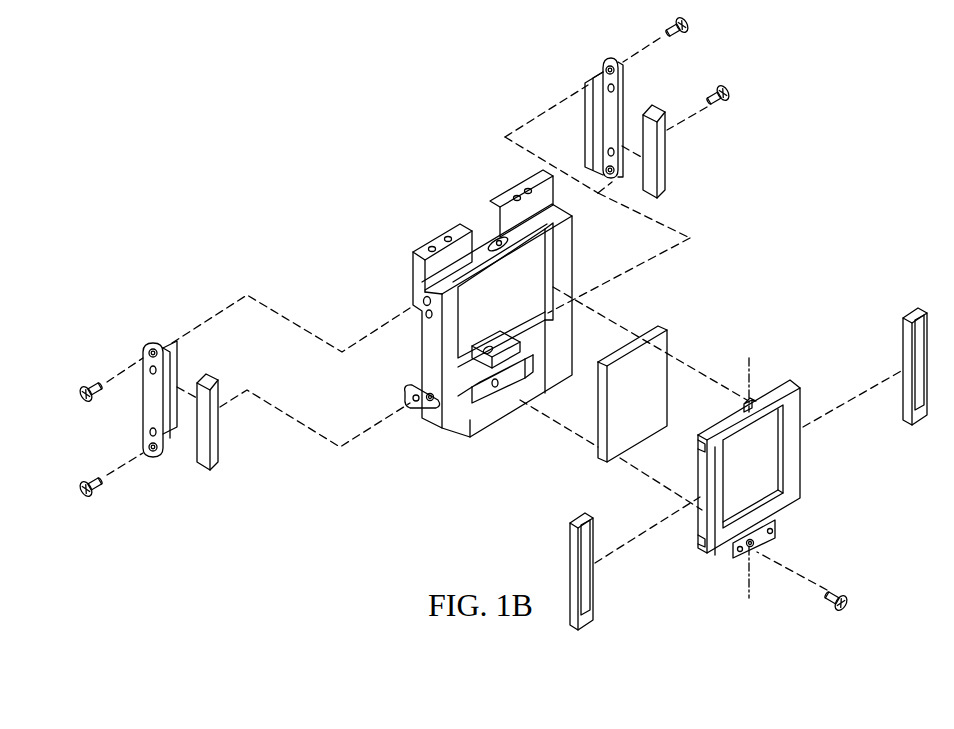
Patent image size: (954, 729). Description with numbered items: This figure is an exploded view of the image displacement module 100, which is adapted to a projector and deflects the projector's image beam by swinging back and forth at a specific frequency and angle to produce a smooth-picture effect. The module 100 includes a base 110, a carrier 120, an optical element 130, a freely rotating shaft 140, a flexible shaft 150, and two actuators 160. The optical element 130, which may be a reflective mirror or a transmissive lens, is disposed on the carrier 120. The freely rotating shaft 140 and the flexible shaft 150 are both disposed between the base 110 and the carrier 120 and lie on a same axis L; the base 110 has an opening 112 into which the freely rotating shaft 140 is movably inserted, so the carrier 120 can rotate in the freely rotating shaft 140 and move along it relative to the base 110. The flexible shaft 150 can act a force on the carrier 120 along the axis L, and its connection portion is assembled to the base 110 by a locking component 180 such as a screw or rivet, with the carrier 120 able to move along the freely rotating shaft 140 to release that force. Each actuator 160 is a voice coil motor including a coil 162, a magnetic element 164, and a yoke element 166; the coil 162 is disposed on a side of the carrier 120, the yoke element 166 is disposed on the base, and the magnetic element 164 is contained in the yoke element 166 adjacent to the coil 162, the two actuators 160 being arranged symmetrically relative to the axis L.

The image displacement module 100 is at (940, 545).
The base 110 is at (467, 232).
The opening 112 is at (495, 241).
The carrier 120 is at (718, 553).
The optical element 130 is at (658, 343).
The freely rotating shaft 140 is at (752, 403).
The flexible shaft 150 is at (770, 537).
The actuator 160 is at (872, 80).
The coil 162 is at (905, 335).
The magnetic element 164 is at (652, 170).
The yoke element 166 is at (614, 101).
The locking component 180 is at (832, 592).
The axis L is at (750, 362).